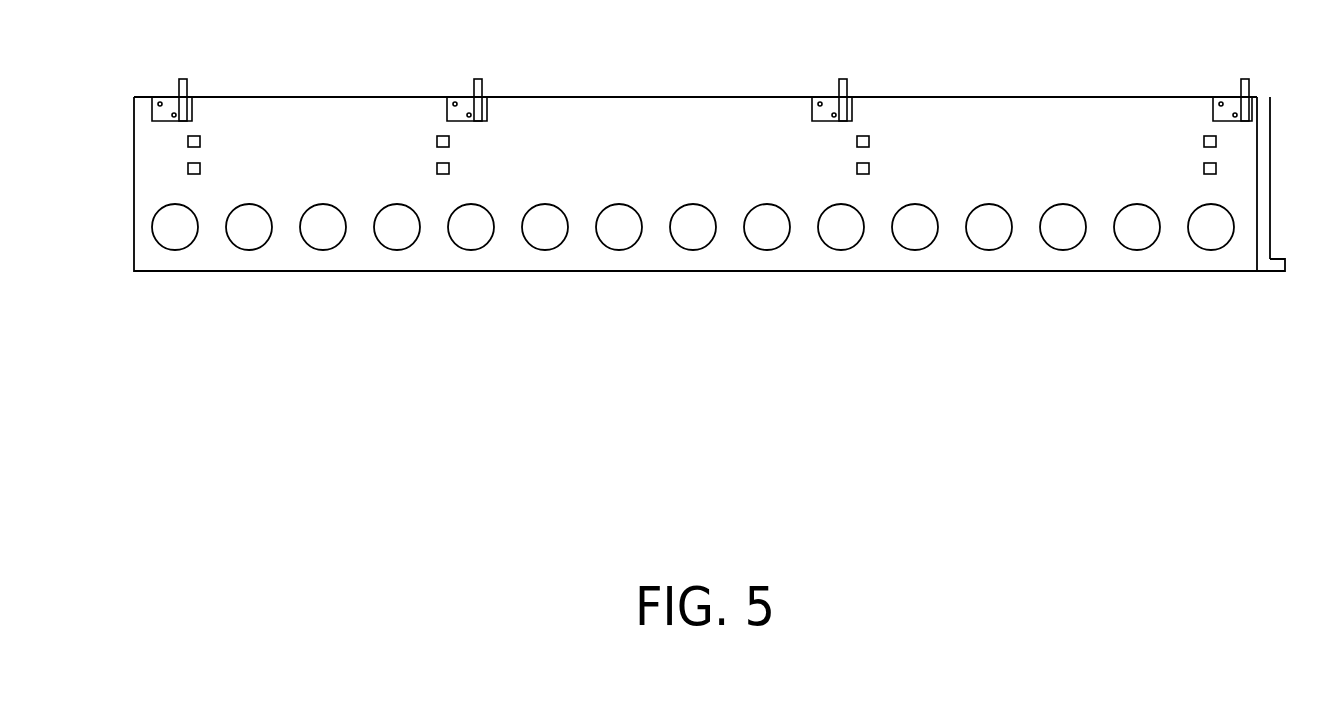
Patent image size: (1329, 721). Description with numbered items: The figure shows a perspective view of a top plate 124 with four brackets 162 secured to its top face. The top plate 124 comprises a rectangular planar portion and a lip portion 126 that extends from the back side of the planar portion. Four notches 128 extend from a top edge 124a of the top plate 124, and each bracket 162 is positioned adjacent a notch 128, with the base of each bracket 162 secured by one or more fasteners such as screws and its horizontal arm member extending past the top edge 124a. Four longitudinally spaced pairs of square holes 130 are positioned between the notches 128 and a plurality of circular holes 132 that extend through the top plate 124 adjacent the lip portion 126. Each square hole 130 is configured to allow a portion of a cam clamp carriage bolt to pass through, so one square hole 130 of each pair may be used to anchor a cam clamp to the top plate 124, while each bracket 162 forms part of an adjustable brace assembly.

The top plate 124 is at (606, 147).
The top edge 124a is at (357, 96).
The lip portion 126 is at (1287, 266).
The notch 128 is at (188, 99).
The square hole 130 is at (200, 169).
The circular hole 132 is at (163, 238).
The bracket 162 is at (169, 101).